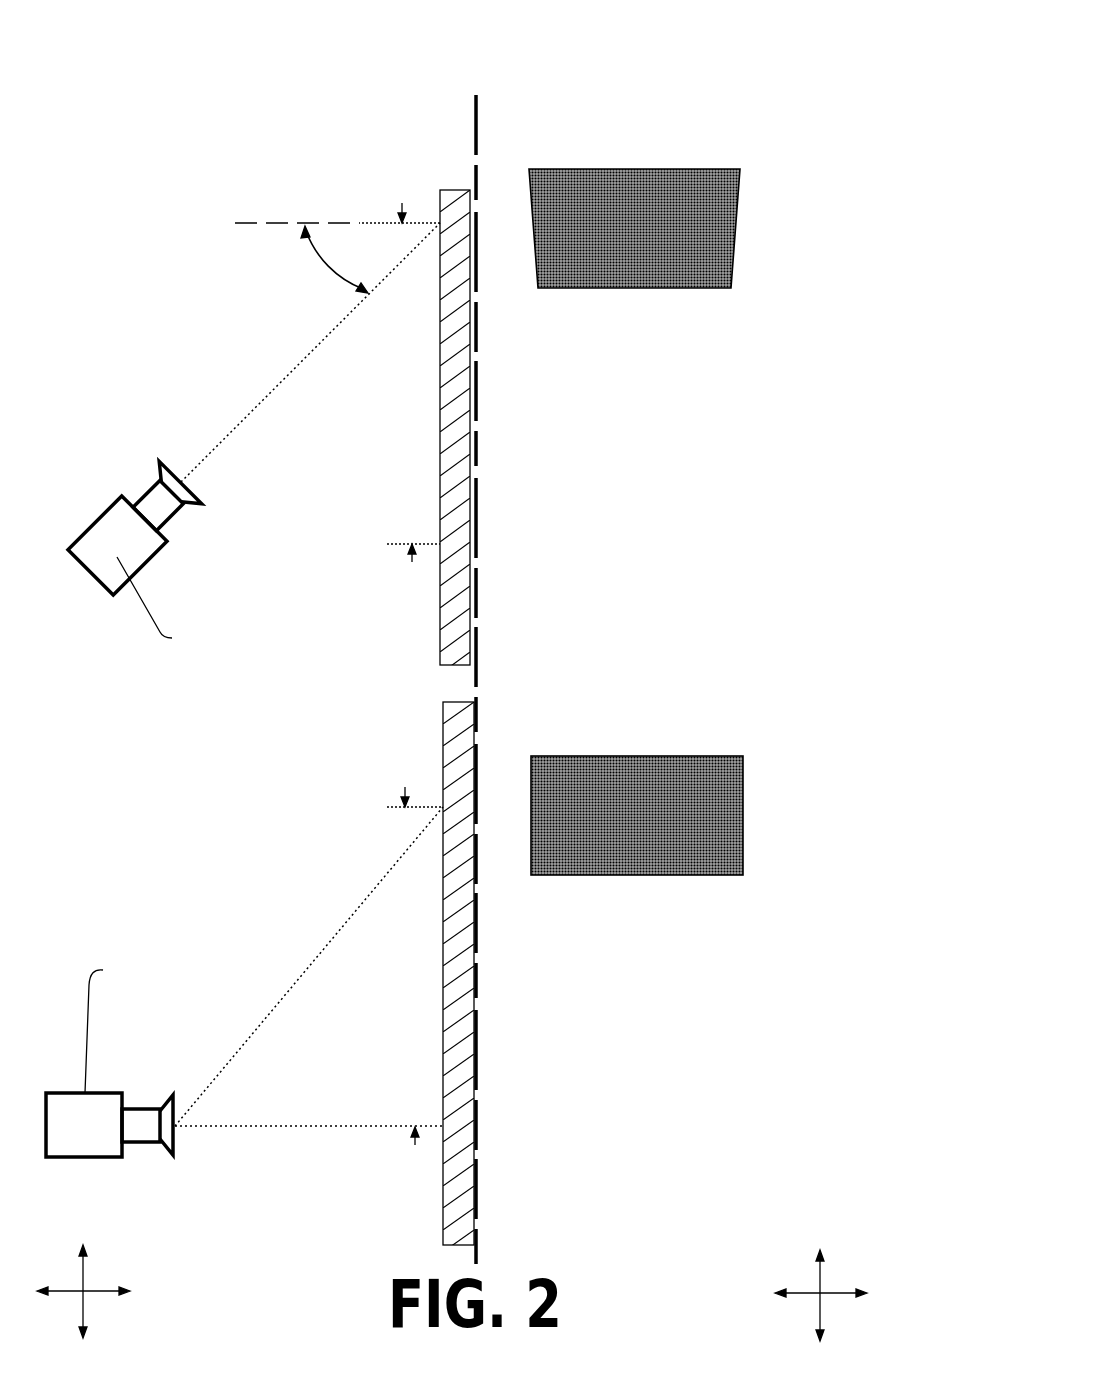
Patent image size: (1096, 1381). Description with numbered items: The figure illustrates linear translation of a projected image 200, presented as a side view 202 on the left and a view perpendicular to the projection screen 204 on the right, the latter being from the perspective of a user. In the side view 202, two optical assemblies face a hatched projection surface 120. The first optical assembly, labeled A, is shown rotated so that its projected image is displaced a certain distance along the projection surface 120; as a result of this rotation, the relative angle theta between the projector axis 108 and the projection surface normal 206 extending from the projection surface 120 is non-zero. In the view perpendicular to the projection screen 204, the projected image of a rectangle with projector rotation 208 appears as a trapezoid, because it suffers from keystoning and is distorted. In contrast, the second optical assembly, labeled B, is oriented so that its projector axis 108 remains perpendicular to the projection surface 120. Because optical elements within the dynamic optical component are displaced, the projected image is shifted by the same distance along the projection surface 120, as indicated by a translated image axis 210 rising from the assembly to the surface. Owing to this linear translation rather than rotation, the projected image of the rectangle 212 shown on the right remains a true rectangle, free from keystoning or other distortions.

The linear translation of a projected image 200 is at (786, 31).
The side view 202 is at (185, 105).
The view perpendicular to the projection screen 204 is at (643, 148).
The projection surface normal 206 is at (249, 205).
The projected image of a rectangle with projector rotation 208 is at (640, 297).
The translated image axis 210 is at (374, 872).
The projected image of the rectangle 212 is at (641, 888).
The projection surface 120 is at (361, 667).
The projector axis 108 is at (267, 1208).